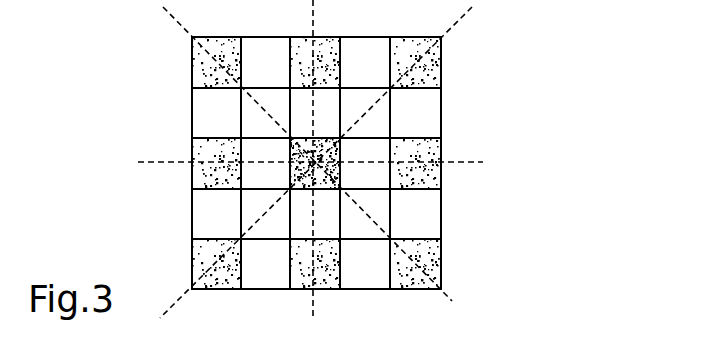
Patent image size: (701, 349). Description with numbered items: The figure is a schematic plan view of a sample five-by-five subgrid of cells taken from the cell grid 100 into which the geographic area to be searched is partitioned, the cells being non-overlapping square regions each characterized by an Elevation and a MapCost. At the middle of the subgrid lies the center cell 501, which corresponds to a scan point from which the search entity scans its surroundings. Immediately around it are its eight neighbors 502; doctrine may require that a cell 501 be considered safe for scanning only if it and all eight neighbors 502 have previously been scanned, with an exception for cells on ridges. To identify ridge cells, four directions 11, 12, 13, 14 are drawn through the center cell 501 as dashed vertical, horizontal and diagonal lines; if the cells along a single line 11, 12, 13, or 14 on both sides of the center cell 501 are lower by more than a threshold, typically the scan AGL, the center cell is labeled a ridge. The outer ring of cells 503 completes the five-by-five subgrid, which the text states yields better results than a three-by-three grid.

The cell grid 100 is at (522, 65).
The direction 11 is at (313, 11).
The direction 12 is at (455, 24).
The direction 13 is at (456, 162).
The direction 14 is at (451, 301).
The center cell 501 is at (342, 150).
The neighbors 502 is at (272, 100).
The outer pixels 503 is at (208, 112).